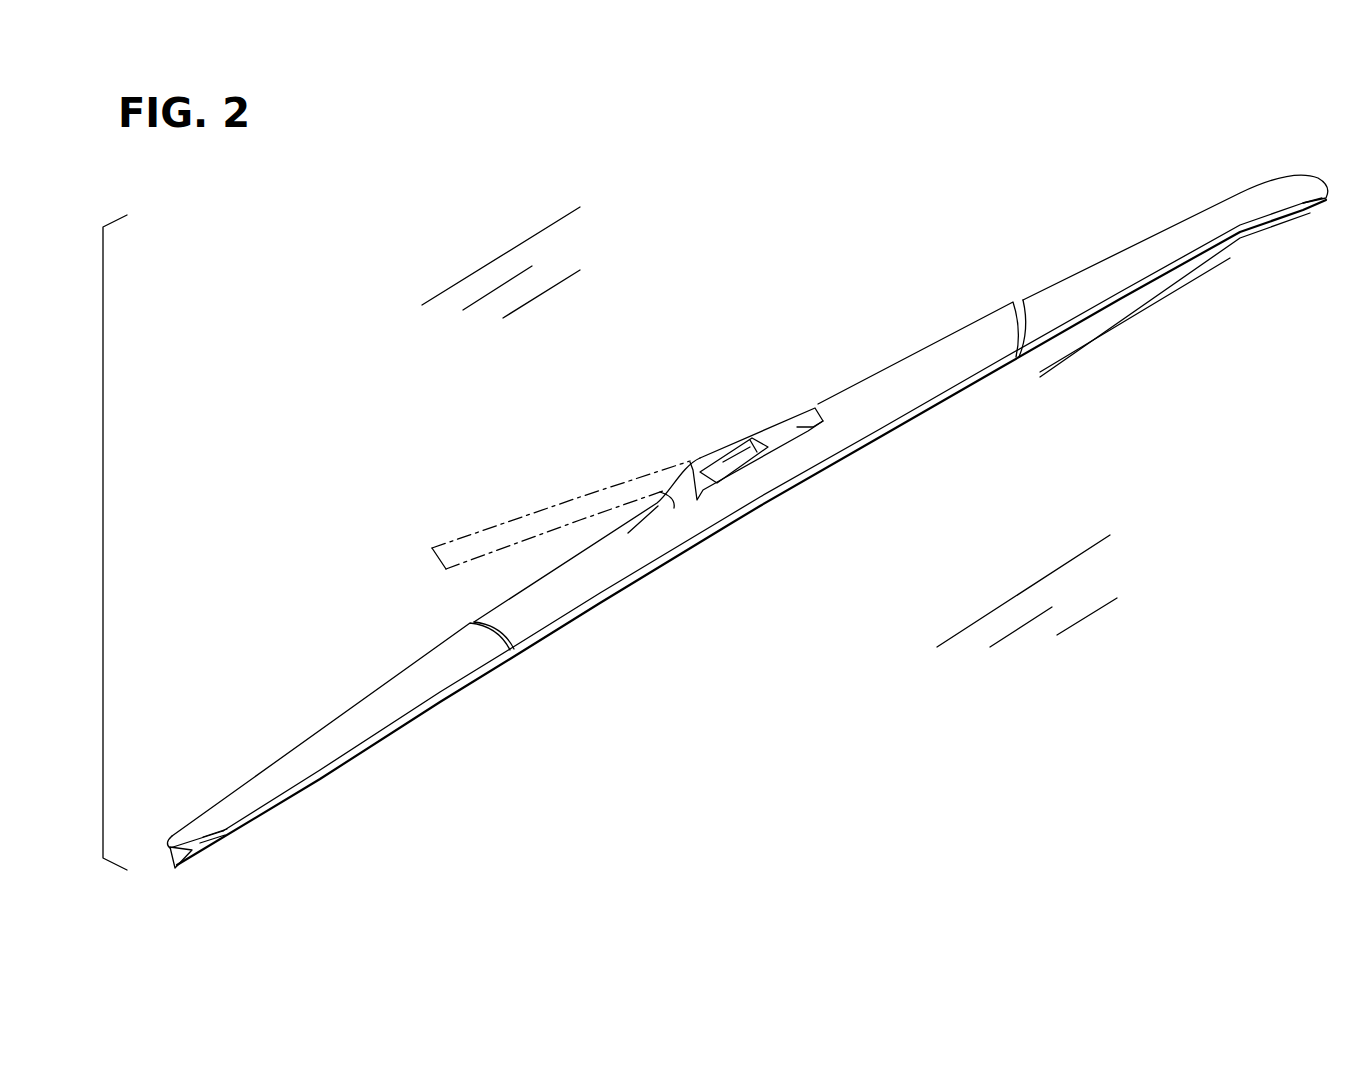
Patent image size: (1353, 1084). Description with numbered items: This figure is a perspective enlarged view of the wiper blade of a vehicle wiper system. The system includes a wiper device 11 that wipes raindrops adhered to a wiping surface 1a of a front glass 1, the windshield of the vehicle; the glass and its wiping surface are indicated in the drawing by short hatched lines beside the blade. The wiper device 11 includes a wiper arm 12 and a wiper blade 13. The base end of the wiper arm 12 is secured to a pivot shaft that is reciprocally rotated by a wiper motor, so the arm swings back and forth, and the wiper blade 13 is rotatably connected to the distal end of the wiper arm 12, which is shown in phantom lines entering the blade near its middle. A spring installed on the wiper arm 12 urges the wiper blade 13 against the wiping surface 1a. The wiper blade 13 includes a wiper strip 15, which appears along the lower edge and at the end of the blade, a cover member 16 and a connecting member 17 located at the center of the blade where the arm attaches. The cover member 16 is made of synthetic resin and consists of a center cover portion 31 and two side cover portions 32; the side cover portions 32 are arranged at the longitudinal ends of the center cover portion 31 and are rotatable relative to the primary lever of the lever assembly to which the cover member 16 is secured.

The front glass 1 is at (513, 233).
The wiping surface 1a is at (1072, 578).
The wiper device 11 is at (747, 553).
The wiper arm 12 is at (557, 505).
The wiper blade 13 is at (906, 340).
The wiper strip 15 is at (181, 862).
The cover member 16 is at (997, 308).
The connecting member 17 is at (777, 435).
The center cover portion 31 is at (977, 356).
The side cover portion 32 is at (477, 652).